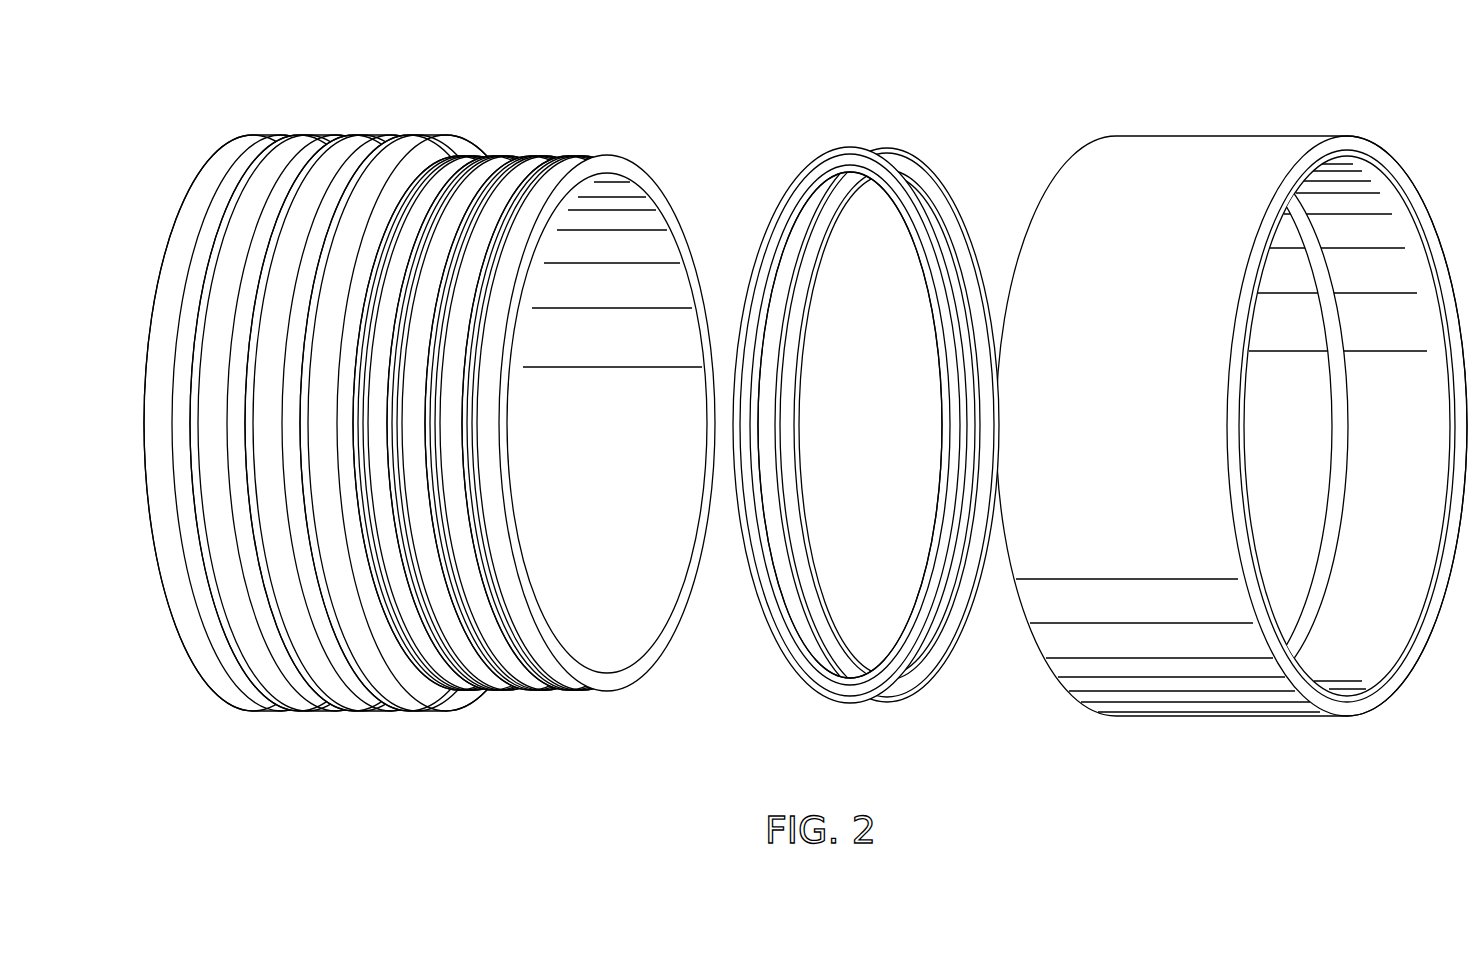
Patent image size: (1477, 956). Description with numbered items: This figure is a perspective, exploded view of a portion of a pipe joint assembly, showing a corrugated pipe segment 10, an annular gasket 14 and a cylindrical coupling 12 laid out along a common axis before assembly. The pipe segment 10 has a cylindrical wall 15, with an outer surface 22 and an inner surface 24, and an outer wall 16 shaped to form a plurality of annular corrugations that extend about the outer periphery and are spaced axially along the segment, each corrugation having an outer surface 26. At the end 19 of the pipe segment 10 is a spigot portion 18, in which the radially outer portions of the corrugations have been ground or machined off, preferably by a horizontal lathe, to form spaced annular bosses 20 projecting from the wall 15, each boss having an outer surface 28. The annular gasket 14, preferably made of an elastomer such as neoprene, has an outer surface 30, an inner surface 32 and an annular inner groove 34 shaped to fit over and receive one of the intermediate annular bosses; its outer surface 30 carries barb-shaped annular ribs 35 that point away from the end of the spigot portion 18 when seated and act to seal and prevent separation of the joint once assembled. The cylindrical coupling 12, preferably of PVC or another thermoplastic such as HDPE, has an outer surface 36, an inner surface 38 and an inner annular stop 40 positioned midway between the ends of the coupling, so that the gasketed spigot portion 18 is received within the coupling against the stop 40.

The corrugated pipe segment 10 is at (438, 415).
The cylindrical coupling 12 is at (1231, 395).
The annular gasket 14 is at (866, 400).
The cylindrical wall 15 is at (650, 633).
The outer wall 16 is at (238, 702).
The spigot portion 18 is at (521, 428).
The end 19 is at (636, 168).
The annular boss 20 is at (450, 694).
The outer surface of the wall 22 is at (492, 512).
The inner surface of the wall 24 is at (613, 411).
The outer surface of the corrugation 26 is at (221, 167).
The outer surface of the annular boss 28 is at (500, 302).
The outer surface of the gasket 30 is at (812, 243).
The inner surface of the gasket 32 is at (925, 667).
The annular inner groove 34 is at (943, 256).
The barb-shaped annular rib 35 is at (866, 425).
The outer surface of the coupling 36 is at (1228, 272).
The inner surface of the coupling 38 is at (1368, 657).
The inner annular stop 40 is at (1343, 437).